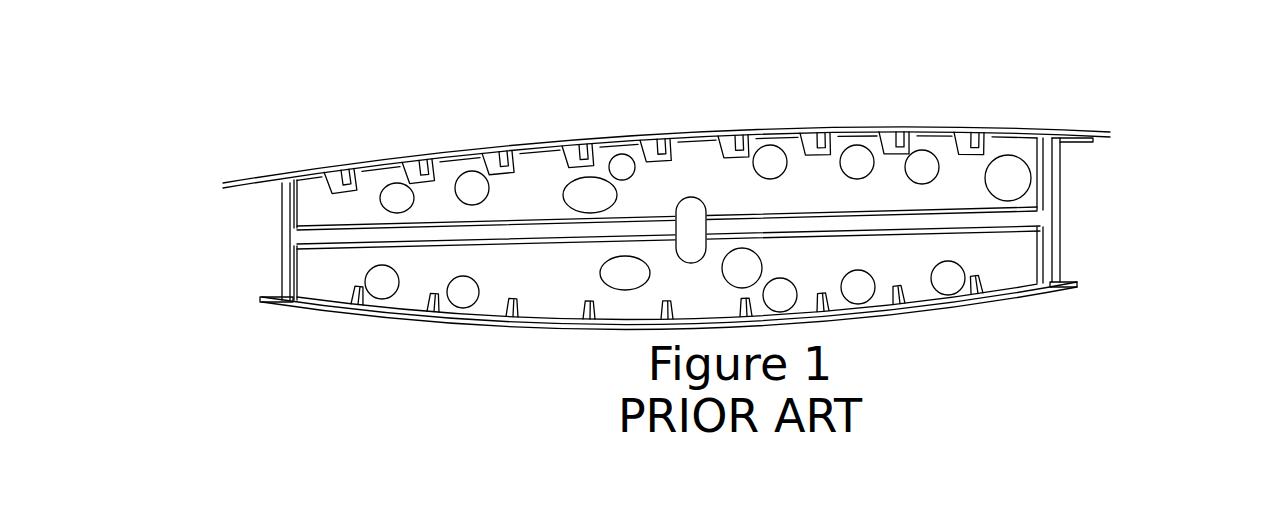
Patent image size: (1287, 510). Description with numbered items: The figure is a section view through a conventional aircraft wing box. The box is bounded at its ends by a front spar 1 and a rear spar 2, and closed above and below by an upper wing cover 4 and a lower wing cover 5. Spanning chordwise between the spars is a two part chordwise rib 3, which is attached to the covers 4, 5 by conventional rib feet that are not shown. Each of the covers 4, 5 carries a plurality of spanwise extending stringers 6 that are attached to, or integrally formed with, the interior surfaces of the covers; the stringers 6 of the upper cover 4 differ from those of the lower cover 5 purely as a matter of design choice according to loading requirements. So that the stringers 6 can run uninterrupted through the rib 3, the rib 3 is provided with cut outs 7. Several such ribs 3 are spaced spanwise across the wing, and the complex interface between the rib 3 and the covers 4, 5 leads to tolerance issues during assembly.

The front spar 1 is at (1057, 147).
The rear spar 2 is at (288, 210).
The two part chordwise rib 3 is at (925, 188).
The upper wing cover 4 is at (368, 153).
The lower wing cover 5 is at (570, 338).
The stringers 6 is at (352, 185).
The cut outs 7 is at (978, 145).